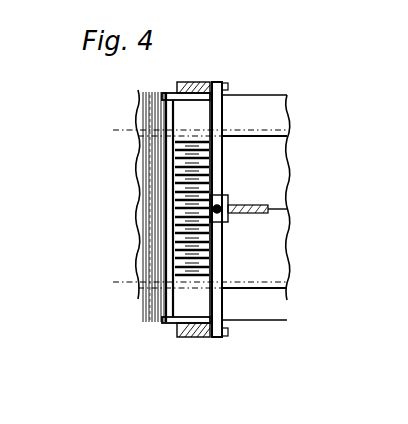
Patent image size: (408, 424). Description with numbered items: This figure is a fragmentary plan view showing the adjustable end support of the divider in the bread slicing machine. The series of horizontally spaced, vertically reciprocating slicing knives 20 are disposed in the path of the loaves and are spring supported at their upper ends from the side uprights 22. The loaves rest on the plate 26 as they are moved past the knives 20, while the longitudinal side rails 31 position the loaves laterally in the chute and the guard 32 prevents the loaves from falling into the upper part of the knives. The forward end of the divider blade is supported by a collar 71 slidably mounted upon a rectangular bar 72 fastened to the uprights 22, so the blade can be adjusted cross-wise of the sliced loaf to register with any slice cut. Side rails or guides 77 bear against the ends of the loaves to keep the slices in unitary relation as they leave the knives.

The slicing knives 20 is at (197, 235).
The side uprights 22 is at (192, 82).
The plate 26 is at (190, 301).
The longitudinal side rails 31 is at (192, 132).
The guard 32 is at (152, 214).
The collar 71 is at (228, 200).
The rectangular bar 72 is at (218, 165).
The side rails or guides 77 is at (264, 130).